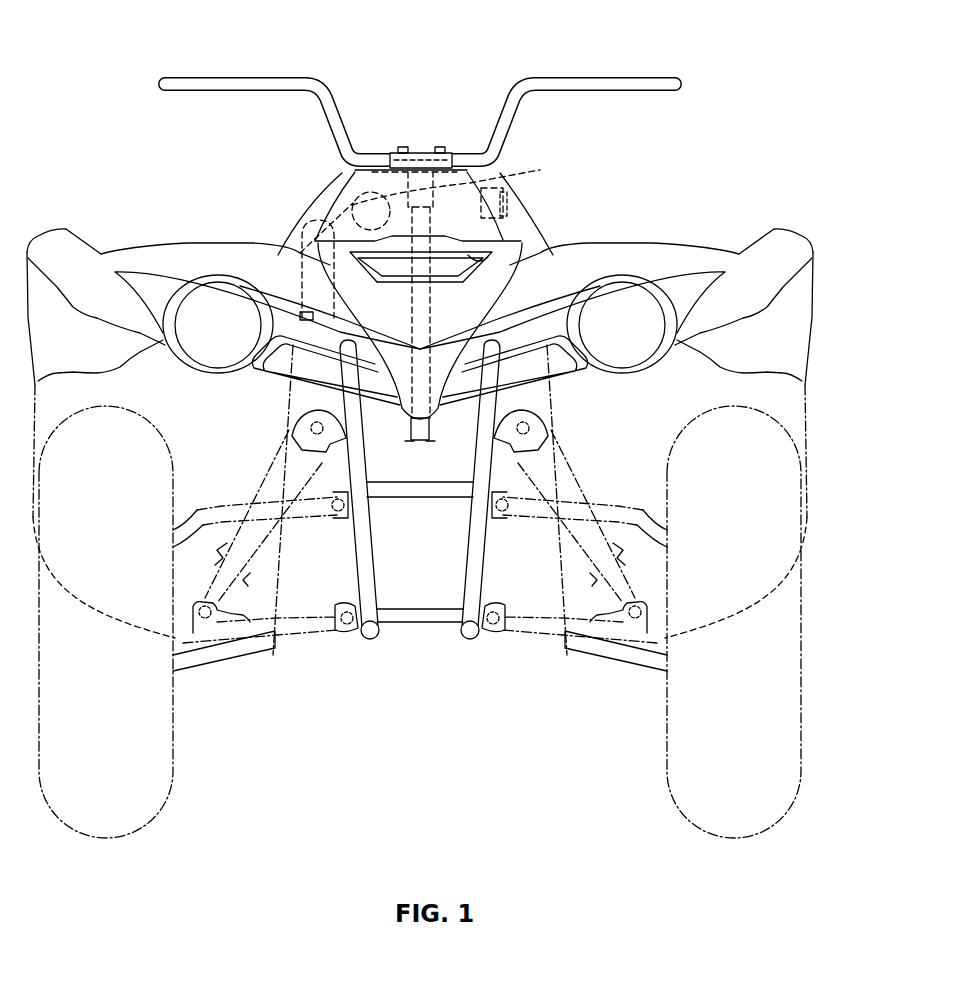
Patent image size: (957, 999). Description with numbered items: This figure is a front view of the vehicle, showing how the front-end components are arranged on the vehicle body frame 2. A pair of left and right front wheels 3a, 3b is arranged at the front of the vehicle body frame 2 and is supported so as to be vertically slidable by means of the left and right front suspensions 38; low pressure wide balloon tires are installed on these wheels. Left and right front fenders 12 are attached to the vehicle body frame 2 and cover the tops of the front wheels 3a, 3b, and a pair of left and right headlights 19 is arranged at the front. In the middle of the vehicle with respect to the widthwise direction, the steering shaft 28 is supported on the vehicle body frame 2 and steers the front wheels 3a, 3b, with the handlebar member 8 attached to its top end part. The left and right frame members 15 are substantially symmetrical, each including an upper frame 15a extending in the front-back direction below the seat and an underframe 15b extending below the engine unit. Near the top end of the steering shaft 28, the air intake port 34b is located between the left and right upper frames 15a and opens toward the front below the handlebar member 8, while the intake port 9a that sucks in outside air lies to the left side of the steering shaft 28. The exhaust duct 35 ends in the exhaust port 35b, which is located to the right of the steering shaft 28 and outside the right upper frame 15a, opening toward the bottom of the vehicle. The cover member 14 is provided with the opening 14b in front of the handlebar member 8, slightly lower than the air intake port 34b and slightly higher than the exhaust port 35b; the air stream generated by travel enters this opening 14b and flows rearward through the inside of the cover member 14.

The handlebar member 8 is at (592, 73).
The front fenders 12 is at (107, 253).
The cover member 14 is at (548, 233).
The opening 14b is at (482, 254).
The headlights 19 is at (202, 368).
The frame members 15 is at (352, 550).
The upper frame 15a is at (295, 360).
The underframe 15b is at (363, 638).
The vehicle body frame 2 is at (505, 458).
The steering shaft 28 is at (504, 190).
The intake port 9a is at (540, 170).
The air intake port 34b is at (355, 200).
The exhaust duct 35 is at (300, 272).
The exhaust port 35b is at (305, 318).
The front suspensions 38 is at (258, 656).
The front wheel 3a is at (665, 738).
The front wheel 3b is at (175, 738).